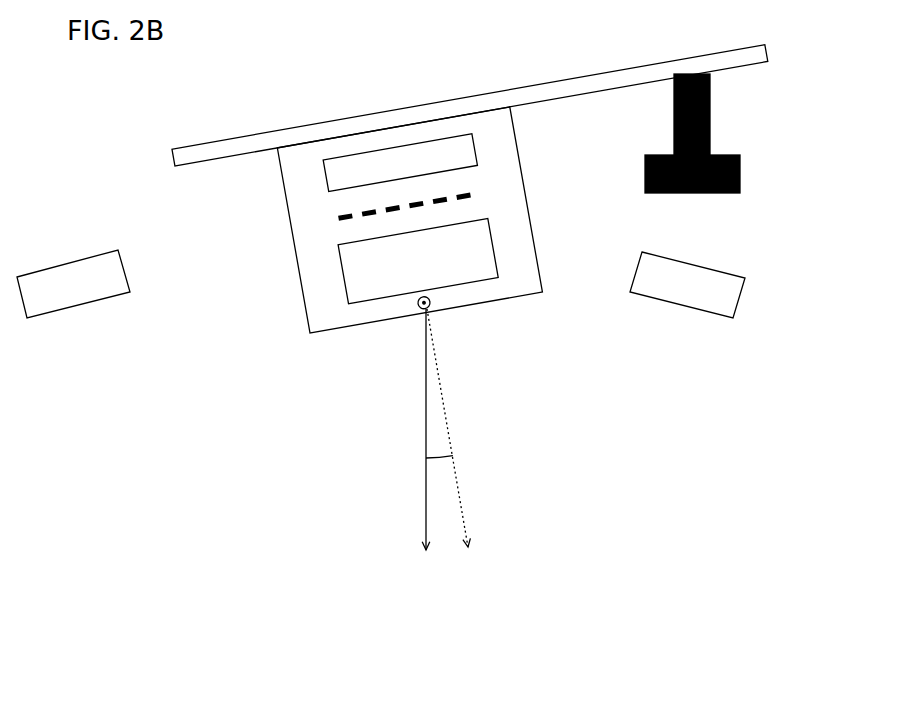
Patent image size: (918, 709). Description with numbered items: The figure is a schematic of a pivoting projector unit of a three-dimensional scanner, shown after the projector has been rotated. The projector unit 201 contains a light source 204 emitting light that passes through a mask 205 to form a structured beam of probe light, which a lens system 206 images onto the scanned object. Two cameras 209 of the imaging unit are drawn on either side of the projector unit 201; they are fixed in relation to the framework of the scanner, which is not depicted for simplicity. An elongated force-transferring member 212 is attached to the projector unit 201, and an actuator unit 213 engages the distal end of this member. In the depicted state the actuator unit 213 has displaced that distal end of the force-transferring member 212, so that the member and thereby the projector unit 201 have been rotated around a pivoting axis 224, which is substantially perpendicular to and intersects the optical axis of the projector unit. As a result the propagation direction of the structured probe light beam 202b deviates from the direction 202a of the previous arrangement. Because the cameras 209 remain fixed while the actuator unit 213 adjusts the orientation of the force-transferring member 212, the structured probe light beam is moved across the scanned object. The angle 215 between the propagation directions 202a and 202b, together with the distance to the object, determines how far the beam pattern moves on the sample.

The force-transferring member 212 is at (470, 93).
The actuator unit 213 is at (730, 133).
The projector unit 201 is at (418, 220).
The light source 204 is at (338, 168).
The mask 205 is at (338, 222).
The lens system 206 is at (356, 263).
The pivoting axis 224 is at (480, 334).
The cameras 209 is at (410, 272).
The structured beam of probe light (previous propagation direction) 202a is at (391, 429).
The structured beam of probe light (deviated propagation direction) 202b is at (468, 446).
The angle 215 is at (507, 490).